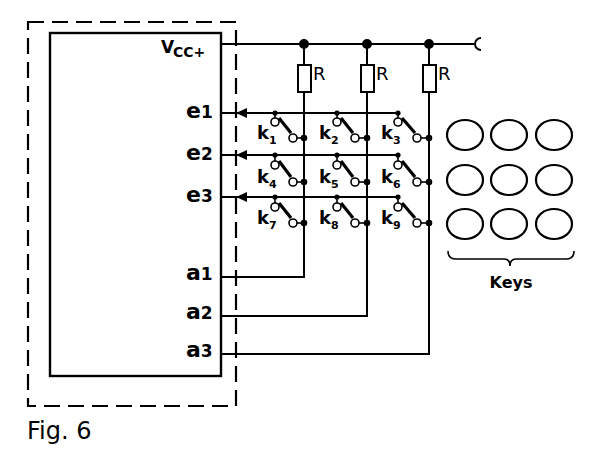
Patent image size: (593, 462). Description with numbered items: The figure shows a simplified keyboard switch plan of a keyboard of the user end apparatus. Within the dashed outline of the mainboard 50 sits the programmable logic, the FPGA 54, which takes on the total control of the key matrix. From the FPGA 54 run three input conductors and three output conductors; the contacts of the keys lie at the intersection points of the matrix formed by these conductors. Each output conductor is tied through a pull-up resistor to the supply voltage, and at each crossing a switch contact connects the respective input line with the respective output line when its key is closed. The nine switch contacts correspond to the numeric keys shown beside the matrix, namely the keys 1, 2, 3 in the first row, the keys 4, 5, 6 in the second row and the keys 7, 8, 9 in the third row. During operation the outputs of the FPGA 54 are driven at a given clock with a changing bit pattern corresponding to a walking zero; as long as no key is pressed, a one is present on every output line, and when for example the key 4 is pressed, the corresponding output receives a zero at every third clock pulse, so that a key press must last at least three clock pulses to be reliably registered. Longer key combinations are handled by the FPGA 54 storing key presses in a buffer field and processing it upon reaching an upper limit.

The mainboard 50 is at (222, 390).
The programmable logic (FPGA) 54 is at (208, 86).
The key 1 is at (465, 135).
The key 2 is at (509, 135).
The key 3 is at (554, 135).
The key 4 is at (465, 180).
The key 5 is at (509, 180).
The key 6 is at (554, 180).
The key 7 is at (465, 224).
The key 8 is at (509, 224).
The key 9 is at (554, 224).